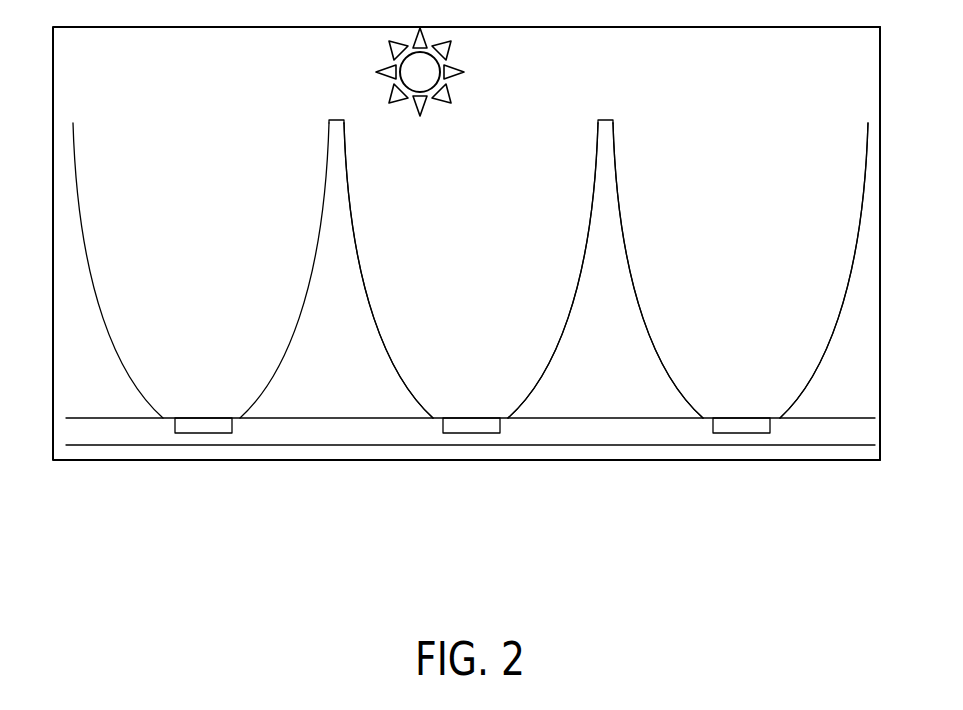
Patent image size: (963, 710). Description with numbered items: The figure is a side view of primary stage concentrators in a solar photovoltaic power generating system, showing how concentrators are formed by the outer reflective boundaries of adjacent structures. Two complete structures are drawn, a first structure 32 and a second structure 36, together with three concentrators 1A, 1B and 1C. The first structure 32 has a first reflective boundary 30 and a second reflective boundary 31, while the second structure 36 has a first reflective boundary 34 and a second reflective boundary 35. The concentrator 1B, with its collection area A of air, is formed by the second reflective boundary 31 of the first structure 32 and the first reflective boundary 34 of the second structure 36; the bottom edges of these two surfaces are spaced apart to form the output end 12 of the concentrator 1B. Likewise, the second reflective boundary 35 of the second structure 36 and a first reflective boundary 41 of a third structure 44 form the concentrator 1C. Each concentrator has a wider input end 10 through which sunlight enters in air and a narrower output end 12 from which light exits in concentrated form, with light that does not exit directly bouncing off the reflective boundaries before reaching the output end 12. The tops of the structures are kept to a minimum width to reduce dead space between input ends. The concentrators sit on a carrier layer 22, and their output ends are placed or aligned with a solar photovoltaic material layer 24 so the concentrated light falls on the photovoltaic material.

The input end 10 is at (86, 100).
The output end 12 is at (124, 377).
The carrier layer 22 is at (125, 441).
The solar photovoltaic material layer 24 is at (206, 436).
The first reflective boundary 30 is at (282, 375).
The second reflective boundary 31 is at (370, 328).
The first structure 32 is at (358, 401).
The first reflective boundary 34 is at (547, 378).
The second reflective boundary 35 is at (658, 372).
The second structure 36 is at (581, 401).
The first reflective boundary 41 is at (812, 385).
The third structure 44 is at (855, 367).
The concentrator 1A is at (202, 72).
The concentrator 1B is at (512, 72).
The concentrator 1C is at (730, 72).
The collection area A is at (204, 248).